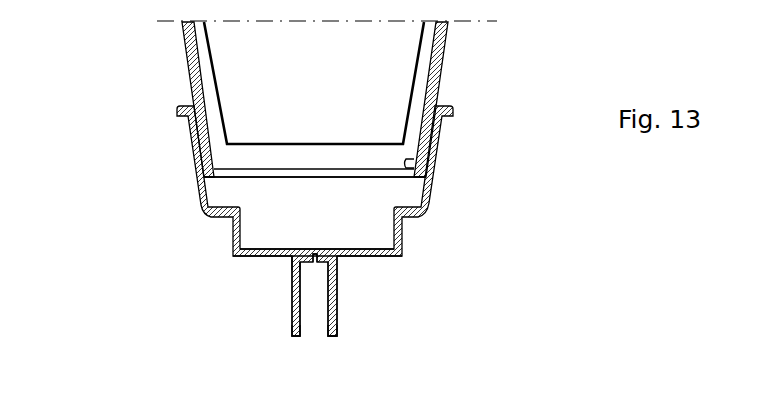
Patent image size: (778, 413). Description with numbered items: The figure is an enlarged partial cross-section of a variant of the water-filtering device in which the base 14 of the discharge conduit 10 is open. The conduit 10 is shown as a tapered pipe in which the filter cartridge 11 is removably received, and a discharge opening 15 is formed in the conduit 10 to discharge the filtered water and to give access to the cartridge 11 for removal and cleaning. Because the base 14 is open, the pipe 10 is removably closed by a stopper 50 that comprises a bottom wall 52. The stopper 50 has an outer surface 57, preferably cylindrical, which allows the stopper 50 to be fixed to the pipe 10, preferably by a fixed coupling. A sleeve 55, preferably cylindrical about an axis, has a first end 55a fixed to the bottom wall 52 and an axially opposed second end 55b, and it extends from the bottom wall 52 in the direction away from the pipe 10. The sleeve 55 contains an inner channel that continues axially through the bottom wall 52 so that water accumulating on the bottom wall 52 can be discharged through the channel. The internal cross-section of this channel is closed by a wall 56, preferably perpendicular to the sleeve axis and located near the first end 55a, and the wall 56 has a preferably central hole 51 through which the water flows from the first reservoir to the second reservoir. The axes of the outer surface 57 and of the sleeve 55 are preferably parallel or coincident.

The discharge conduit 10 is at (441, 63).
The filter cartridge 11 is at (318, 87).
The base 14 is at (265, 178).
The discharge opening 15 is at (412, 172).
The stopper 50 is at (185, 196).
The hole 51 is at (318, 263).
The bottom wall 52 is at (256, 257).
The sleeve 55 is at (339, 305).
The first end 55a is at (292, 262).
The second end 55b is at (340, 337).
The wall 56 is at (303, 332).
The outer surface 57 is at (440, 153).